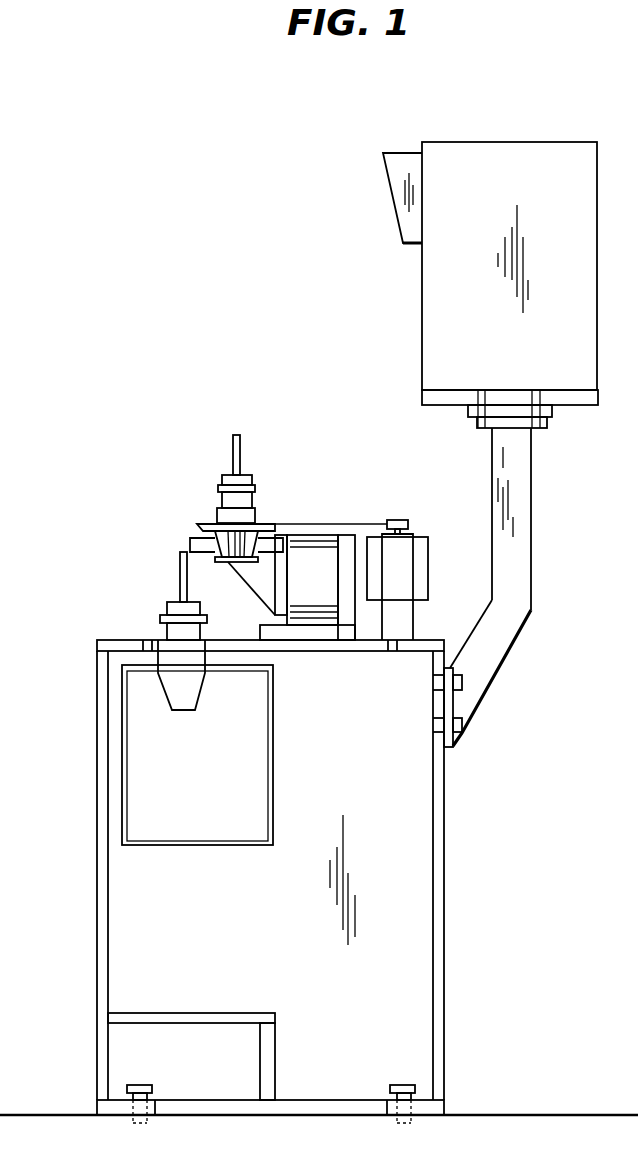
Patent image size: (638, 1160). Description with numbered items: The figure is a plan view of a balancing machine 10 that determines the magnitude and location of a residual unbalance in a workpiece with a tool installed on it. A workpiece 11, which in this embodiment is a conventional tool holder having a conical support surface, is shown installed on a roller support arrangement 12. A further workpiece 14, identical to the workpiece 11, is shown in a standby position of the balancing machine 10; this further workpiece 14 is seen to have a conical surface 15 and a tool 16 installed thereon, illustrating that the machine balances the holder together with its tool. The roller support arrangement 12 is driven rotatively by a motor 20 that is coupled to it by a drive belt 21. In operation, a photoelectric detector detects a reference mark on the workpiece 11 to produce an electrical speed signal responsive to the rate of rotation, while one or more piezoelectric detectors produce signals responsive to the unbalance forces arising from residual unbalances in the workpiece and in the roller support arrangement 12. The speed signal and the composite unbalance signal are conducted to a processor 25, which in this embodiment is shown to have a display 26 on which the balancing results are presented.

The balancing machine 10 is at (320, 363).
The workpiece 11 is at (222, 488).
The roller support arrangement 12 is at (216, 520).
The further workpiece 14 is at (167, 608).
The conical surface 15 is at (180, 688).
The tool 16 is at (180, 580).
The motor 20 is at (428, 562).
The drive belt 21 is at (290, 522).
The processor 25 is at (478, 142).
The display 26 is at (393, 200).